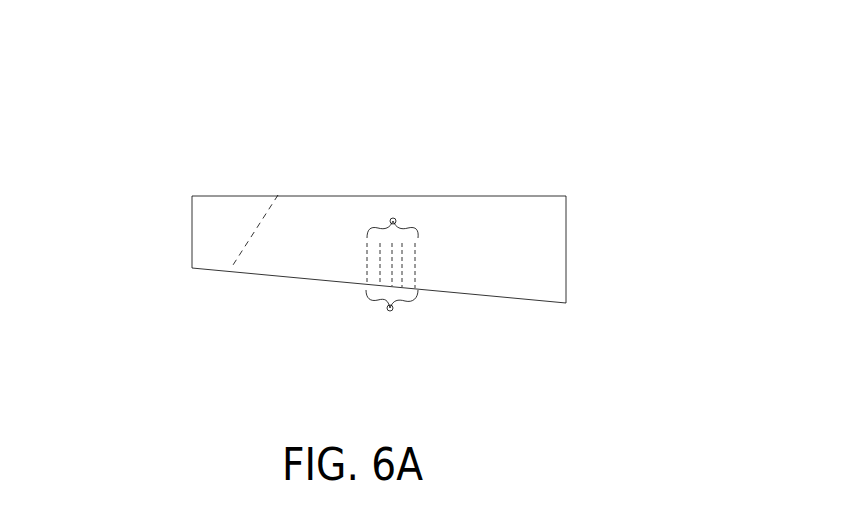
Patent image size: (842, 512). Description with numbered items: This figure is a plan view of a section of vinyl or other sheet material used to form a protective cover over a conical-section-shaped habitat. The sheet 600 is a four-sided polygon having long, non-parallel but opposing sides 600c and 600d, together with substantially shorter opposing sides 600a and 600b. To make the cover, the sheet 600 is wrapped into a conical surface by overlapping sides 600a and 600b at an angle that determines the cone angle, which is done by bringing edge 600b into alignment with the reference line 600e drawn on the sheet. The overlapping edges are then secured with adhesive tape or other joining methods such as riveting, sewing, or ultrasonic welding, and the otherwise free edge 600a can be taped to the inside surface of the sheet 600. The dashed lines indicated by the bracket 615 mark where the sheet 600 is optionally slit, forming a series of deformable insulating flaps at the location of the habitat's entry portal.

The sheet 600 is at (163, 170).
The side 600a is at (184, 233).
The side 600b is at (577, 232).
The side 600c is at (492, 196).
The side 600d is at (282, 282).
The reference line 600e is at (268, 222).
The dashed lines 615 is at (395, 220).